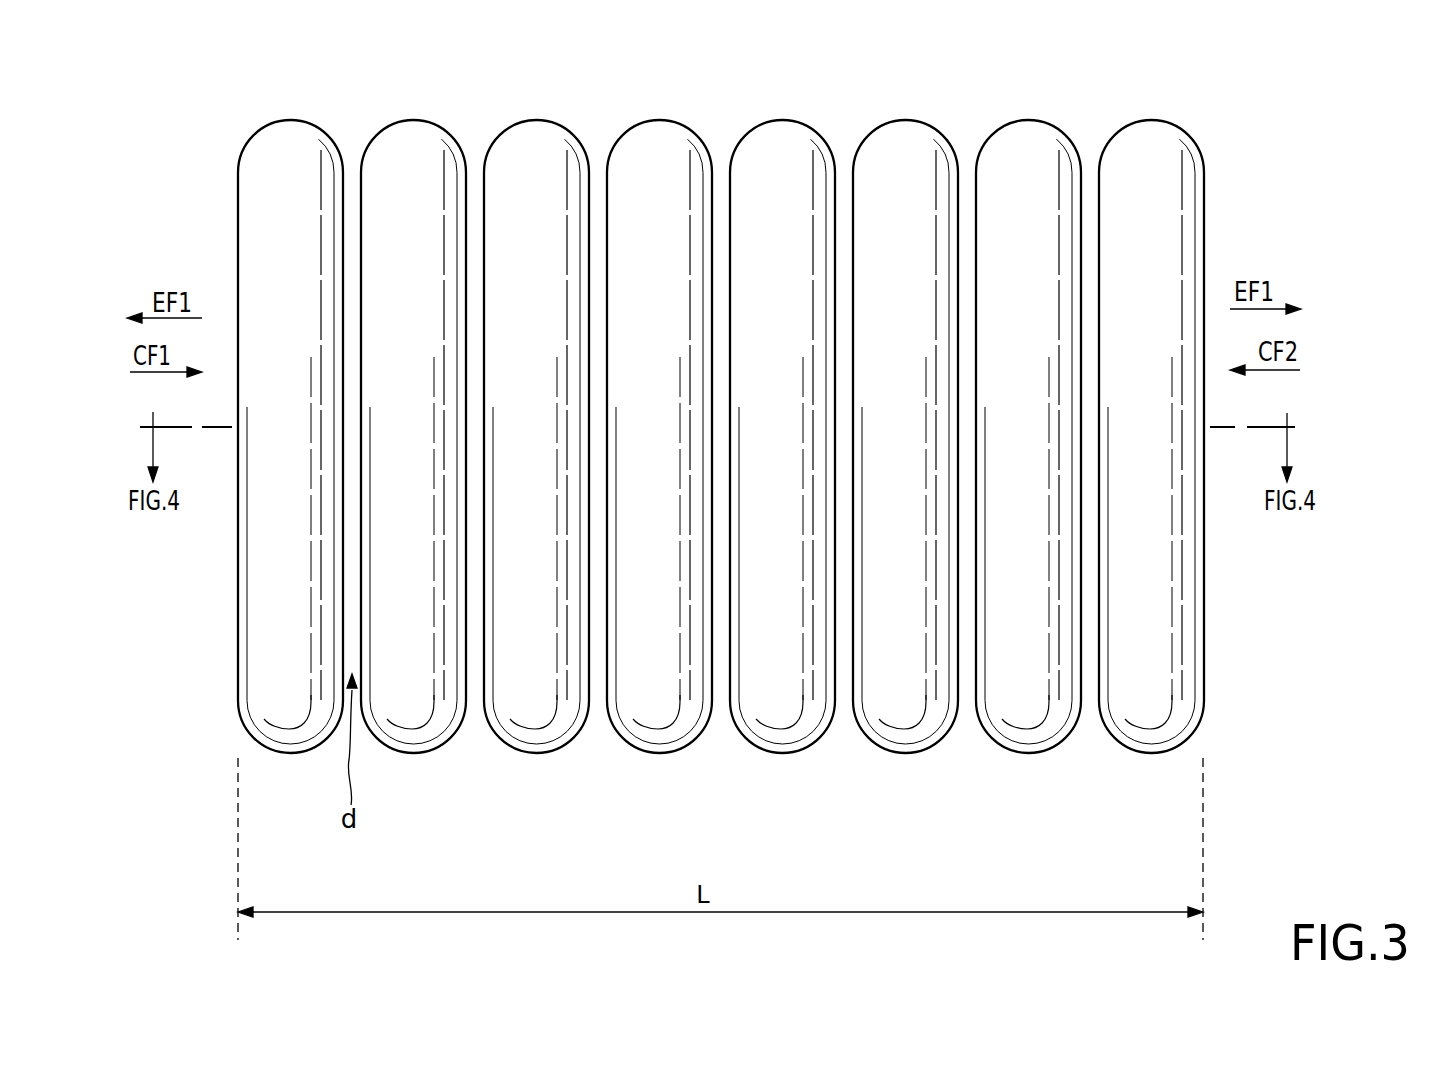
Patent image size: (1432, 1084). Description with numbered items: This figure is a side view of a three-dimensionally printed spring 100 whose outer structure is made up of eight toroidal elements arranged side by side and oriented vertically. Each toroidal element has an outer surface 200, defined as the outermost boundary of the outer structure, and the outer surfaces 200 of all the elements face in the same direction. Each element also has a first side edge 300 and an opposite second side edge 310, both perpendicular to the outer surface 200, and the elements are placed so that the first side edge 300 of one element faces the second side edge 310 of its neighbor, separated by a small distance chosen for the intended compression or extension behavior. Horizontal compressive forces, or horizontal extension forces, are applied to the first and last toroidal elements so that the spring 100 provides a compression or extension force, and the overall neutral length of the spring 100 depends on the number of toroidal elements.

The 3D-printed spring 100 is at (768, 461).
The outer surface 200 is at (721, 461).
The first side edge 300 is at (228, 261).
The second side edge 310 is at (348, 172).